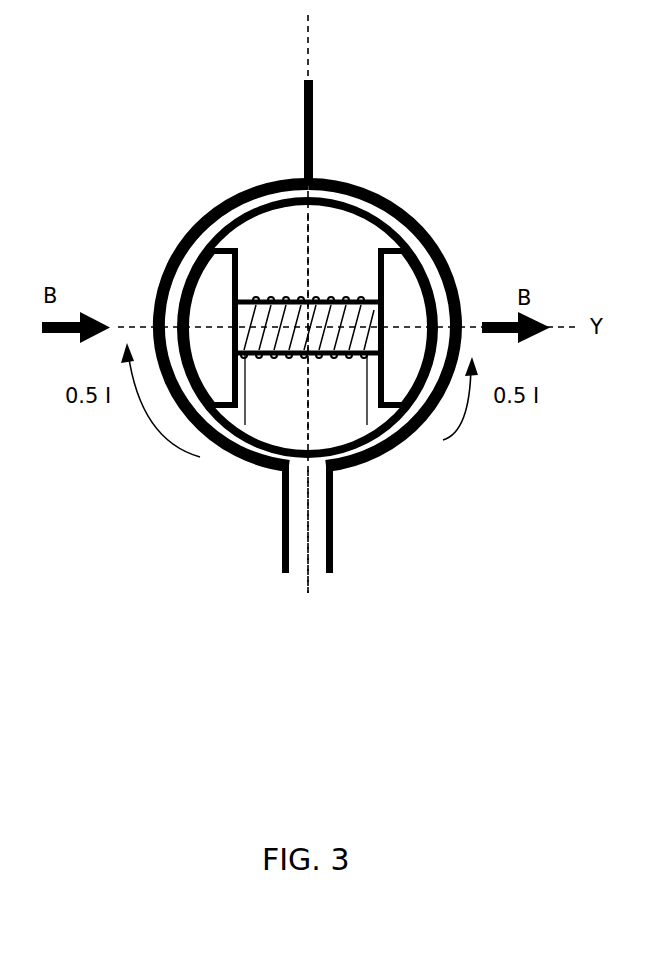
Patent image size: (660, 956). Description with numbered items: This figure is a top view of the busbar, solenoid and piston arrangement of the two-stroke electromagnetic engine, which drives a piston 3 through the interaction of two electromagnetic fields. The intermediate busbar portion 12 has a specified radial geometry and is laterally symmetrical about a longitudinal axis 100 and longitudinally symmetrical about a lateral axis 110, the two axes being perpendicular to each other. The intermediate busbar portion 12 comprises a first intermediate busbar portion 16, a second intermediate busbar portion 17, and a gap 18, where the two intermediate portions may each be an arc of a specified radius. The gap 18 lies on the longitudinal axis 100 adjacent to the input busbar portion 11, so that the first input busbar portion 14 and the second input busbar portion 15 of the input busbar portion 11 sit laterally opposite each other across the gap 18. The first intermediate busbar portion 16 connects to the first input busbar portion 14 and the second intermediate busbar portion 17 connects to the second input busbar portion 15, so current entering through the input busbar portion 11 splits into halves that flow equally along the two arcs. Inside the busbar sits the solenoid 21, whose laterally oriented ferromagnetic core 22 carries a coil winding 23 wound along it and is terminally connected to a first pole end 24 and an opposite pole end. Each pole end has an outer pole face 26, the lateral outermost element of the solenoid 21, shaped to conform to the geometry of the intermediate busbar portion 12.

The longitudinal axis 100 is at (308, 37).
The lateral axis 110 is at (576, 336).
The piston 3 is at (256, 198).
The solenoid 21 is at (347, 250).
The intermediate busbar portion 12 is at (375, 295).
The first intermediate busbar portion 16 is at (225, 457).
The second intermediate busbar portion 17 is at (374, 463).
The first pole end 24 is at (200, 295).
The outer pole face 26 is at (172, 305).
The ferromagnetic core 22 is at (290, 345).
The coil winding 23 is at (280, 300).
The input busbar portion 11 is at (333, 548).
The first input busbar portion 14 is at (283, 574).
The second input busbar portion 15 is at (333, 574).
The gap 18 is at (300, 486).